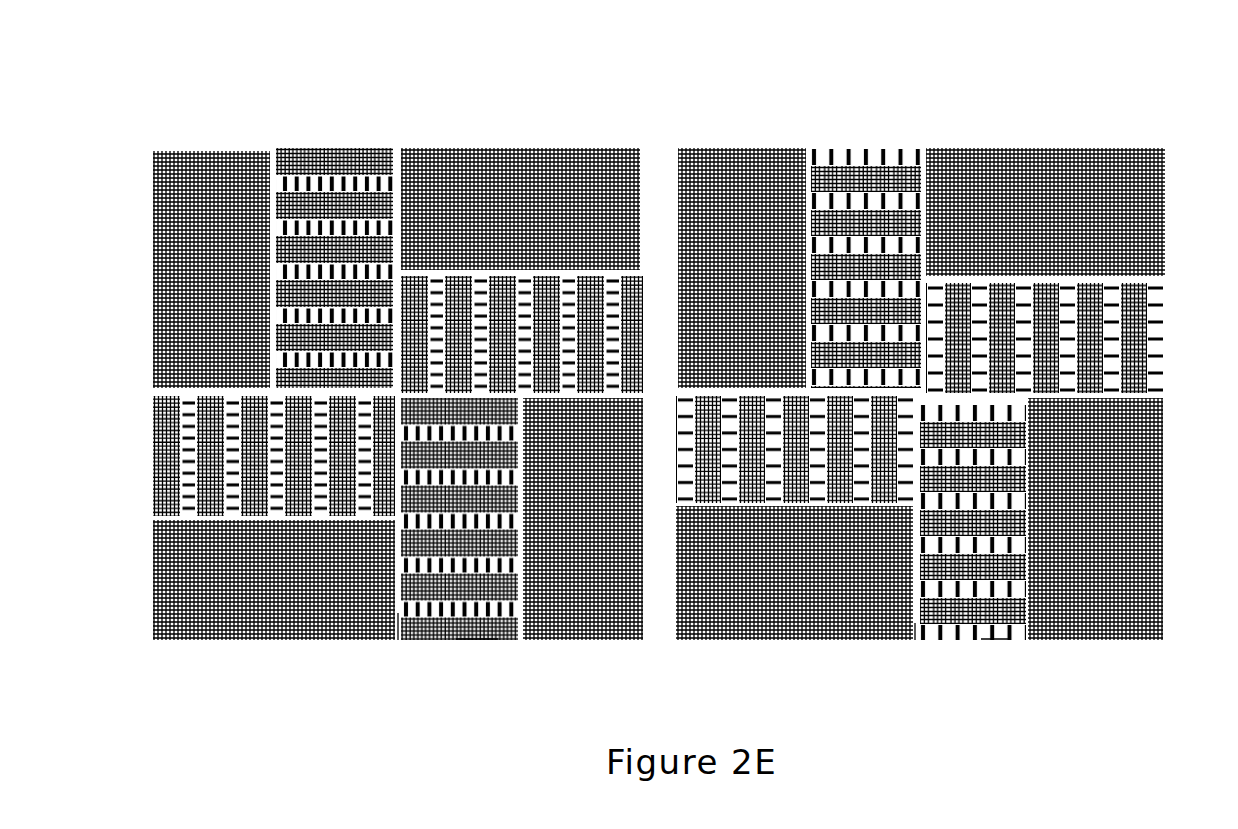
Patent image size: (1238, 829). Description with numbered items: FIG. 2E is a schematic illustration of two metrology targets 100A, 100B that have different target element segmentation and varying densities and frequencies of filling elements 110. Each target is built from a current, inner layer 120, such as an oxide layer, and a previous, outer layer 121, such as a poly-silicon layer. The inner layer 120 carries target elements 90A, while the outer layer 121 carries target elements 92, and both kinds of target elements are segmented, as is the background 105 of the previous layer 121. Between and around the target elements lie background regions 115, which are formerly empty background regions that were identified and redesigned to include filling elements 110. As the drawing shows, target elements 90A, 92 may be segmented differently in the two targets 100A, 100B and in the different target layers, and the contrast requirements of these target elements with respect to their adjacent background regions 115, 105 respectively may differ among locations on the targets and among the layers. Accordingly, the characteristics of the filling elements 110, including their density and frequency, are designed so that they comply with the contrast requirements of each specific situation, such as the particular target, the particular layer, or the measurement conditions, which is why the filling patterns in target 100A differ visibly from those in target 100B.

The target 100A is at (432, 43).
The target 100B is at (937, 43).
The target element 92 is at (575, 140).
The background 105 is at (145, 373).
The filling element 110 is at (427, 632).
The background region 115 is at (488, 635).
The current layer 120 is at (311, 122).
The previous layer 121 is at (217, 122).
The target element 90A is at (390, 605).